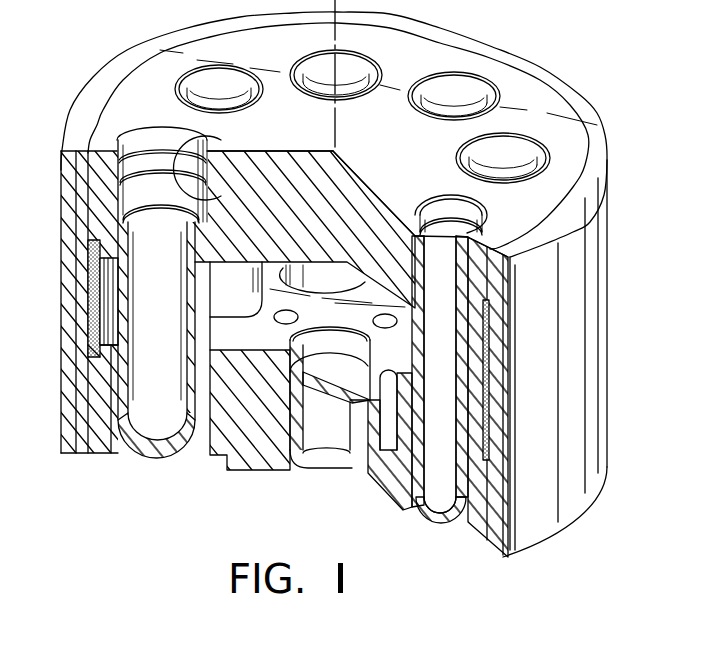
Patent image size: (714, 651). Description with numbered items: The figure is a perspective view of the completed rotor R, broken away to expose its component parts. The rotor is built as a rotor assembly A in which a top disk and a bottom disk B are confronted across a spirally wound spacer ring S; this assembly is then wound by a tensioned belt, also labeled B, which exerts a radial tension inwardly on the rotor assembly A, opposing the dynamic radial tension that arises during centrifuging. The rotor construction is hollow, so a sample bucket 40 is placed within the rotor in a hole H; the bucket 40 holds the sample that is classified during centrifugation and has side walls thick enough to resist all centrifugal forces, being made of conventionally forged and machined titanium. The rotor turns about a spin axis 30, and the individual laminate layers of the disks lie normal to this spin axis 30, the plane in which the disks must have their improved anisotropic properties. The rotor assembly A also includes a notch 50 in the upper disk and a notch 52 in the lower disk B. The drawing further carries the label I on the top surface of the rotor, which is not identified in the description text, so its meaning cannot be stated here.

The sample bucket 40 is at (135, 129).
The hole H is at (200, 135).
The spin axis 30 is at (335, 117).
The rotor R is at (604, 116).
The top surface I is at (523, 215).
The notch 50 is at (92, 268).
The rotor assembly A is at (72, 298).
The spirally wound spacer ring S is at (83, 340).
The notch 52 is at (87, 356).
The bottom disk B is at (511, 393).